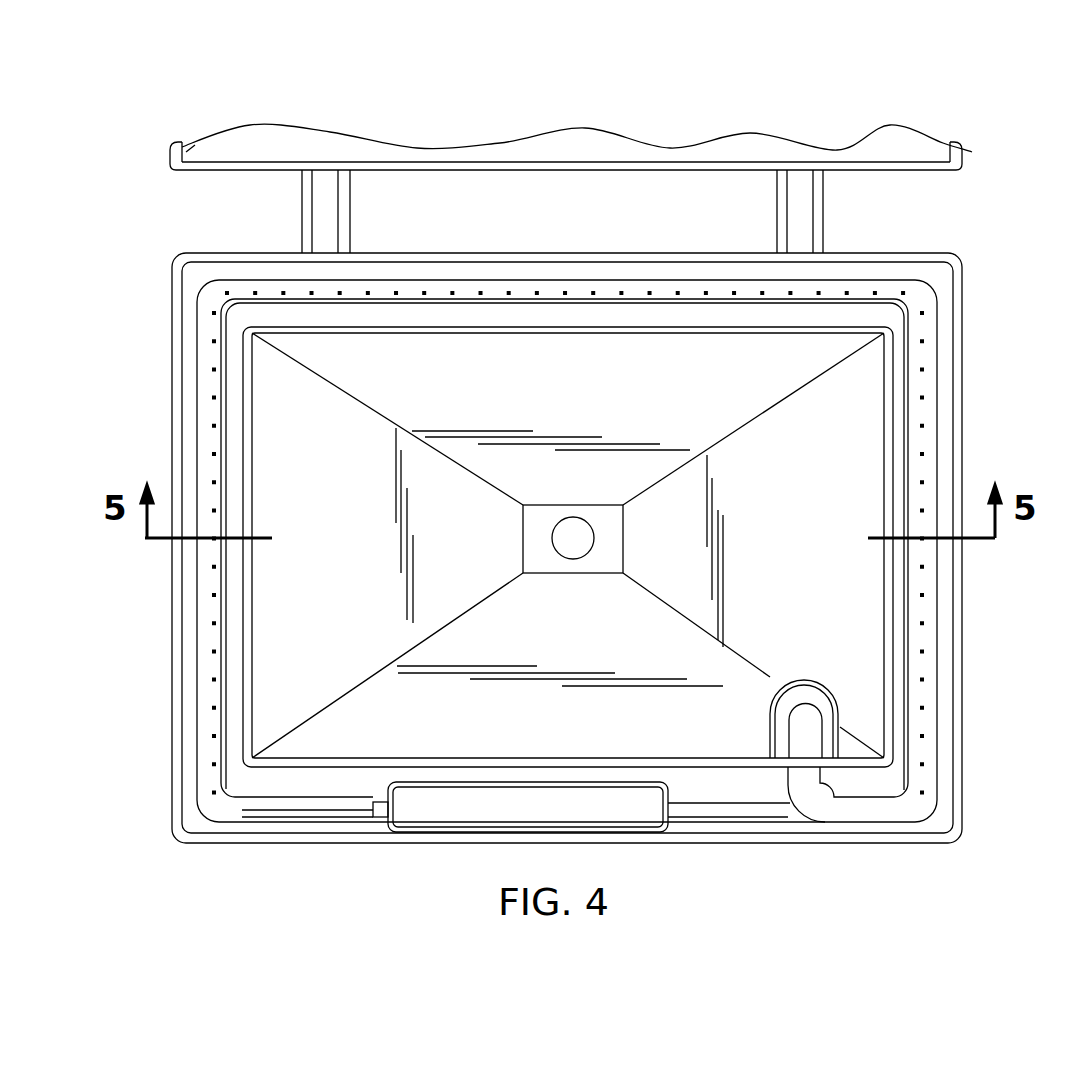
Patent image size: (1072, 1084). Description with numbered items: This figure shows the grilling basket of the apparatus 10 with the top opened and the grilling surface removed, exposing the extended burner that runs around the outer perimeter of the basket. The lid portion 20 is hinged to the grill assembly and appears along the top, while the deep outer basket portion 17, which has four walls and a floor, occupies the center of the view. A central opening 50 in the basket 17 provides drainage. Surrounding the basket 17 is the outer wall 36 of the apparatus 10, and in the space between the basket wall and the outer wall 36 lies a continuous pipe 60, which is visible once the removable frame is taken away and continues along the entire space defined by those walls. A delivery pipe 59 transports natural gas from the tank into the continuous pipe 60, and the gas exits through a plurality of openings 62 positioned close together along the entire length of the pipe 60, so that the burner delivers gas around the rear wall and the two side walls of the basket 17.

The apparatus 10 is at (174, 235).
The outer basket portion 17 is at (570, 405).
The lid portion 20 is at (170, 163).
The outer wall 36 is at (955, 368).
The central opening 50 is at (573, 535).
The delivery pipe 59 is at (772, 716).
The continuous pipe 60 is at (925, 415).
The openings 62 is at (920, 508).